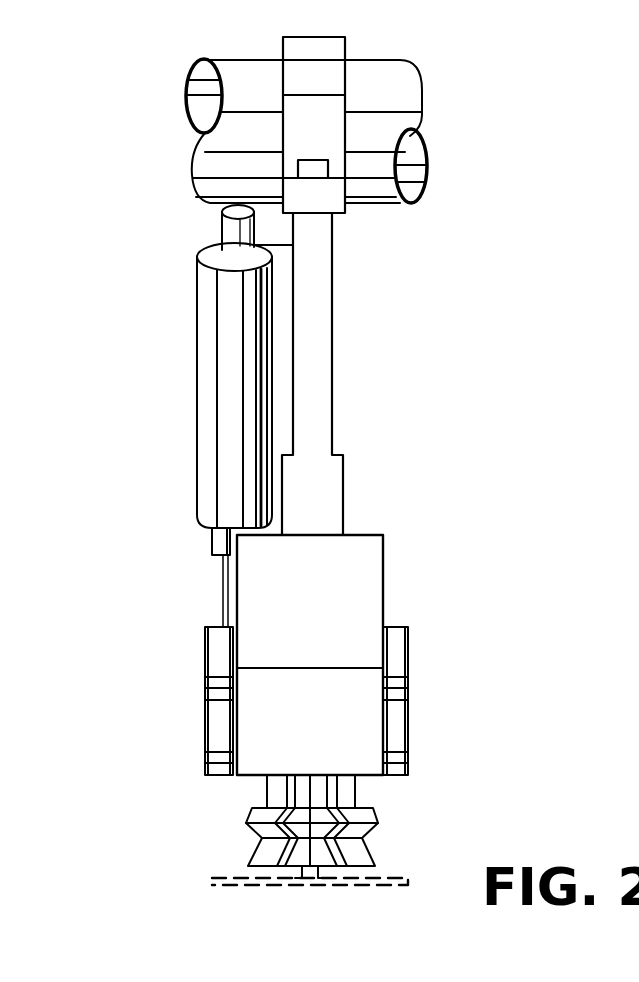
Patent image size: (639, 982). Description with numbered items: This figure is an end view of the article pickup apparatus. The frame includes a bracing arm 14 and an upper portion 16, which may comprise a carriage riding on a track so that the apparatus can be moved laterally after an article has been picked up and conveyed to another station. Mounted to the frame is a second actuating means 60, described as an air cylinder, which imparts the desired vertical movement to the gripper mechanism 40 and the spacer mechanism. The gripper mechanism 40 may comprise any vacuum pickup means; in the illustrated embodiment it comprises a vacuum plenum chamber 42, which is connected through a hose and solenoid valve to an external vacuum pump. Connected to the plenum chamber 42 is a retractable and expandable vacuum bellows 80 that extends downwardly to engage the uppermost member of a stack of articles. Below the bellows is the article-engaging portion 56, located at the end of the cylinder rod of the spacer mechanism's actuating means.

The upper portion 16 is at (345, 50).
The bracing arm 14 is at (332, 355).
The second actuating means 60 is at (197, 462).
The gripper mechanism 40 is at (297, 679).
The vacuum plenum chamber 42 is at (314, 590).
The vacuum bellows 80 is at (248, 823).
The article-engaging portion 56 is at (212, 880).